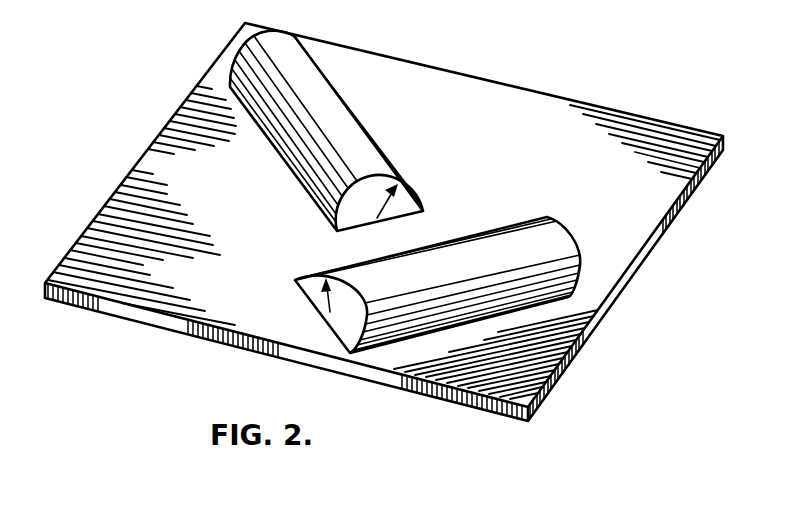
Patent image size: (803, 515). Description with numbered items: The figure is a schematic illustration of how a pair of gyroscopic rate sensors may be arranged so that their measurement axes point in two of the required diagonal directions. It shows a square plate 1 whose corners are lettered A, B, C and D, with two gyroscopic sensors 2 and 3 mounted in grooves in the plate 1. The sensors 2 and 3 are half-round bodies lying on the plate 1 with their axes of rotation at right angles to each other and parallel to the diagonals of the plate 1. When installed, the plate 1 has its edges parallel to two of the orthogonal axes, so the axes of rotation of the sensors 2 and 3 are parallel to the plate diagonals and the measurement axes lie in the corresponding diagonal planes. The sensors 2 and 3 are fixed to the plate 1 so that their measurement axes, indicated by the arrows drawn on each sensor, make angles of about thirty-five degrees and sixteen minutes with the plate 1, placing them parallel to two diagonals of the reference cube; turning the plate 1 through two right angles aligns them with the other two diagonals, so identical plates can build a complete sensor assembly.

The square plate 1 is at (490, 98).
The gyroscopic sensor 2 is at (280, 45).
The gyroscopic sensor 3 is at (568, 298).